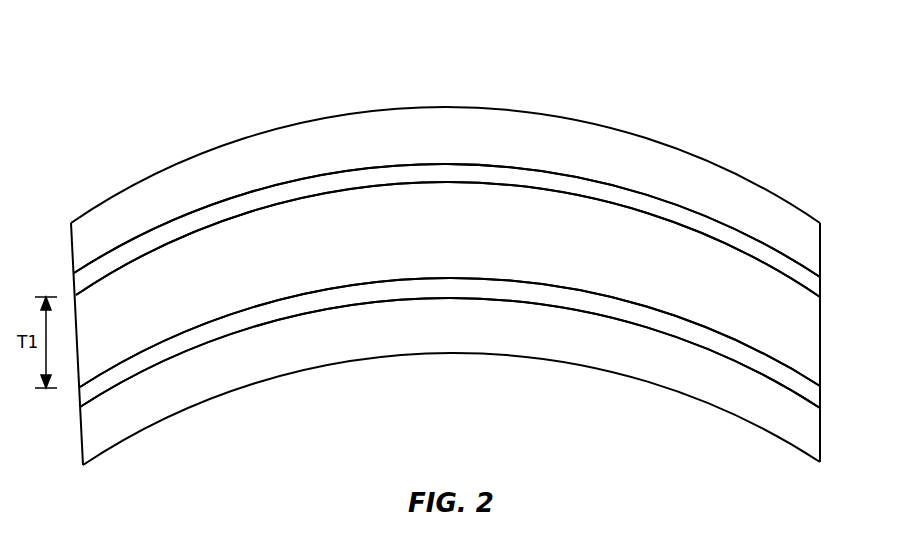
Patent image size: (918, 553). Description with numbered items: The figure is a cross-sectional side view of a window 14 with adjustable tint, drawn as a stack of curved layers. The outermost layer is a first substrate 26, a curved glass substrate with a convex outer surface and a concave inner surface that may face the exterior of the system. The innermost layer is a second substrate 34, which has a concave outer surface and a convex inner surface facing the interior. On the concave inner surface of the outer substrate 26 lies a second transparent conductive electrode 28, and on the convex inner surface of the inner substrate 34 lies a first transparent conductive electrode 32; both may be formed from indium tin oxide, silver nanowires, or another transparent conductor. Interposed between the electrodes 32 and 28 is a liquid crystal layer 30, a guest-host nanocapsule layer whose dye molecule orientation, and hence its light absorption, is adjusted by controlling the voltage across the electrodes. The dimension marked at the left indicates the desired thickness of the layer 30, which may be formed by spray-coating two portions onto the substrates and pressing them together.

The window 14 is at (478, 239).
The first substrate 26 is at (818, 242).
The second transparent conductive electrode 28 is at (818, 290).
The liquid crystal layer 30 is at (818, 338).
The first transparent conductive electrode 32 is at (814, 396).
The second substrate 34 is at (814, 434).